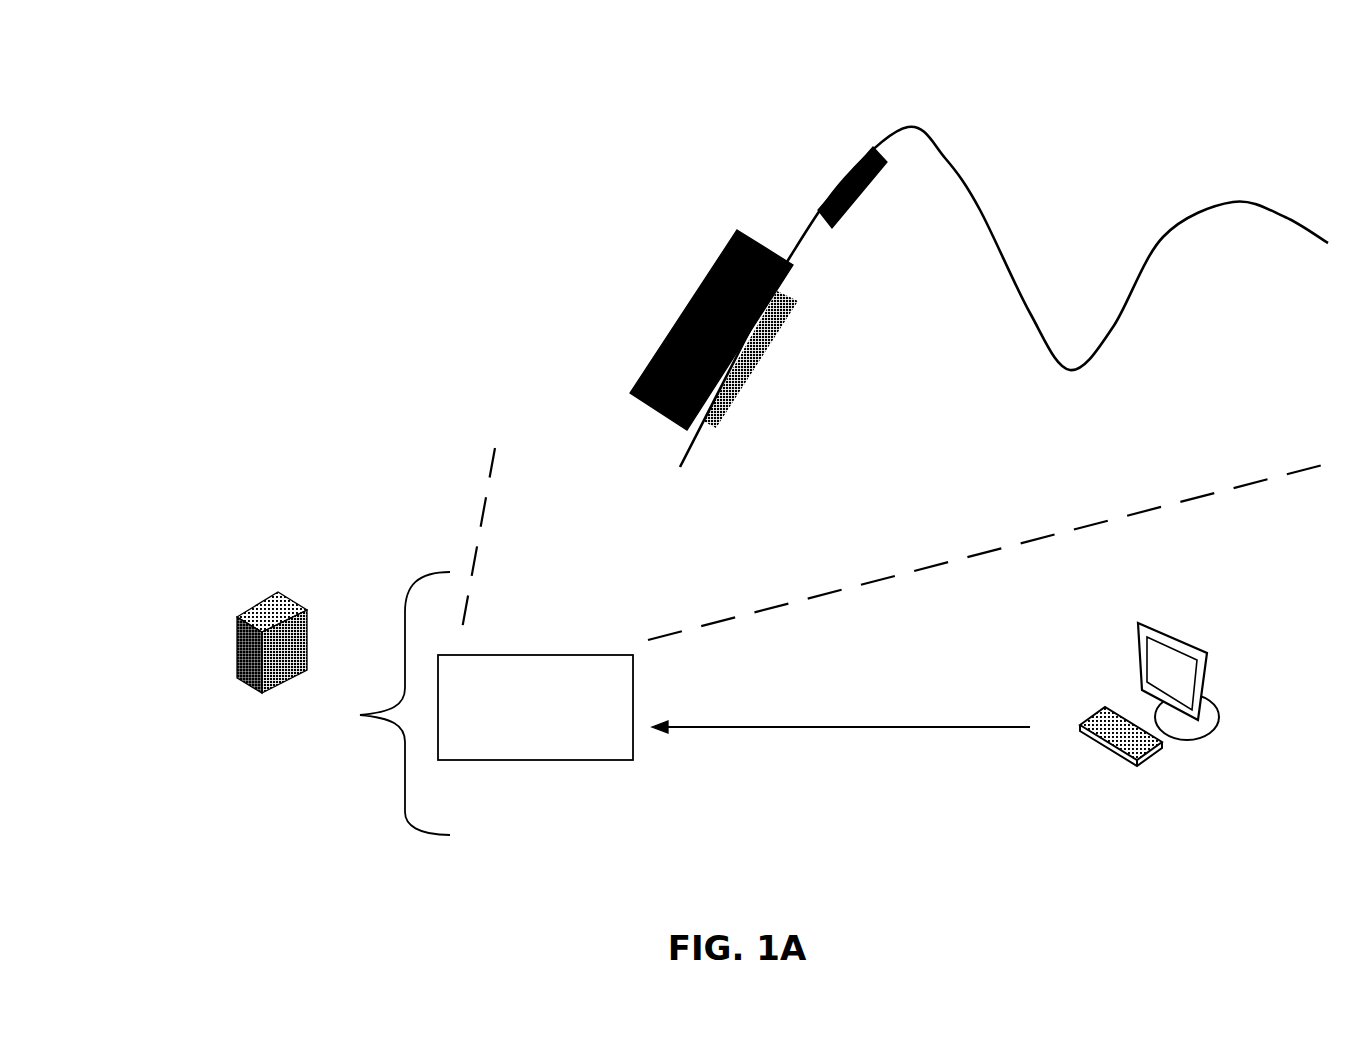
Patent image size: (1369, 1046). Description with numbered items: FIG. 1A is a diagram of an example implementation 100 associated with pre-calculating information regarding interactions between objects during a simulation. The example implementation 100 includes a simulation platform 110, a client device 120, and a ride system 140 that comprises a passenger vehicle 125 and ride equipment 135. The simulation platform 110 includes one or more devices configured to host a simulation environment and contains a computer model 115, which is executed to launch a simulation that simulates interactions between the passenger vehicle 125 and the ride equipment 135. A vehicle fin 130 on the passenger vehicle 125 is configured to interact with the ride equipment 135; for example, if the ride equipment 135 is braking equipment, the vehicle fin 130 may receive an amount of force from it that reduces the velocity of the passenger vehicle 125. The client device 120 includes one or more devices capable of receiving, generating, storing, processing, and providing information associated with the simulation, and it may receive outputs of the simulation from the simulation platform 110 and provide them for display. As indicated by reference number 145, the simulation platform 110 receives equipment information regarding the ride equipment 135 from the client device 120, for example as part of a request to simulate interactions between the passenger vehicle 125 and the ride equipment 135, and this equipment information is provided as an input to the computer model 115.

The example implementation 100 is at (254, 71).
The simulation platform 110 is at (335, 703).
The computer model 115 is at (535, 707).
The client device 120 is at (1162, 738).
The passenger vehicle 125 is at (655, 330).
The vehicle fin 130 is at (809, 359).
The ride equipment 135 is at (815, 188).
The ride system 140 is at (1084, 150).
The receive equipment information 145 is at (841, 692).